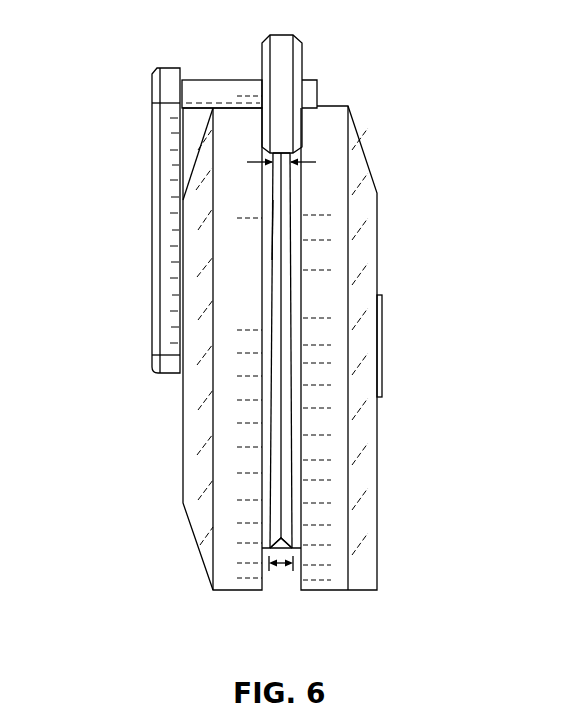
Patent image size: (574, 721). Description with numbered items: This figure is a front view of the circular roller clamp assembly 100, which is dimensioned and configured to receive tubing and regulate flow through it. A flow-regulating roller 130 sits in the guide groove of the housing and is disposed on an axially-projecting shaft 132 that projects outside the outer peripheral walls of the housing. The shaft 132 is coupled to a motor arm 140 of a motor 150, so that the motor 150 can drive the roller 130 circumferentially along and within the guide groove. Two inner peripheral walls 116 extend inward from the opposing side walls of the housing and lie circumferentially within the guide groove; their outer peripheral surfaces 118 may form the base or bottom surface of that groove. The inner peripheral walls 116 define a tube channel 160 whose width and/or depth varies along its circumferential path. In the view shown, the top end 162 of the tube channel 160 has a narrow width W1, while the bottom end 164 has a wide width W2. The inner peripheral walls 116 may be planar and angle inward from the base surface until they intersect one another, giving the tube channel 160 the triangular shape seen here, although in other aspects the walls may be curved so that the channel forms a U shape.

The circular roller clamp assembly 100 is at (381, 49).
The inner peripheral walls 116 is at (273, 457).
The outer peripheral surfaces 118 is at (292, 230).
The flow-regulating roller 130 is at (285, 34).
The axially-projecting shaft 132 is at (208, 80).
The motor arm 140 is at (152, 152).
The motor 150 is at (382, 362).
The tube channel 160 is at (283, 332).
The top end 162 is at (291, 156).
The bottom end 164 is at (285, 542).
The narrow width W1 is at (306, 165).
The wide width W2 is at (287, 568).